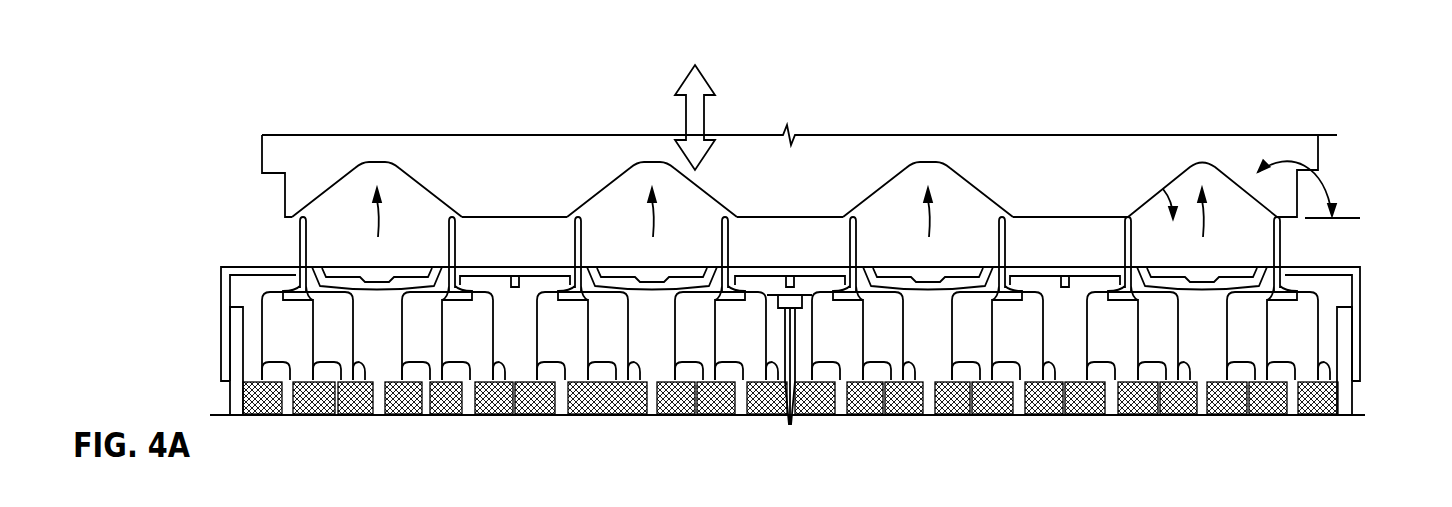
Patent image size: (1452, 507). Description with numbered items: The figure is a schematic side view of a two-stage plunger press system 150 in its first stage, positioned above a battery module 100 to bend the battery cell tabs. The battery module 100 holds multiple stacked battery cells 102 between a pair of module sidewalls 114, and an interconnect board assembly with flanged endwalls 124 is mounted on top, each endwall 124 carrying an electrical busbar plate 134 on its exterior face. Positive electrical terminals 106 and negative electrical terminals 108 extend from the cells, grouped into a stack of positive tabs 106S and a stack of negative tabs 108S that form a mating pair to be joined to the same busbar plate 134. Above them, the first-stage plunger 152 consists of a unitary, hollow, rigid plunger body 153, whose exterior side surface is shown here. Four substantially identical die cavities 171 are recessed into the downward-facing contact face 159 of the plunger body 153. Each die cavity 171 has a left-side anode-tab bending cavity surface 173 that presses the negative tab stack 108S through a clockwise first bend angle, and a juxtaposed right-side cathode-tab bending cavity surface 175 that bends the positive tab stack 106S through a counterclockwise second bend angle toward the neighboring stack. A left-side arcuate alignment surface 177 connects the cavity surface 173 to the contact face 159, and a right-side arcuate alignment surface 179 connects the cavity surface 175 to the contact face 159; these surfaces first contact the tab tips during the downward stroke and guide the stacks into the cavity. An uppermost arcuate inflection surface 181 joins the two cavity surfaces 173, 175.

The battery module 100 is at (210, 262).
The battery cells 102 is at (1332, 470).
The positive electrical terminal 106 is at (478, 381).
The stack of positive battery cell tabs 106S is at (1283, 250).
The negative electrical terminal 108 is at (340, 381).
The stack of negative battery cell tabs 108S is at (1125, 232).
The module sidewalls 114 is at (1353, 395).
The endwalls 124 is at (1353, 308).
The electrical busbar plates 134 is at (886, 267).
The two-stage plunger press system 150 is at (227, 78).
The first-stage plunger 152 is at (262, 136).
The plunger body 153 is at (263, 158).
The contact face 159 is at (790, 220).
The die cavities 171 is at (790, 230).
The anode-tab bending cavity surface 173 is at (1182, 165).
The cathode-tab bending cavity surface 175 is at (1252, 188).
The left-side arcuate alignment surface 177 is at (1126, 216).
The right-side arcuate alignment surface 179 is at (1283, 236).
The arcuate inflection surface 181 is at (1210, 173).